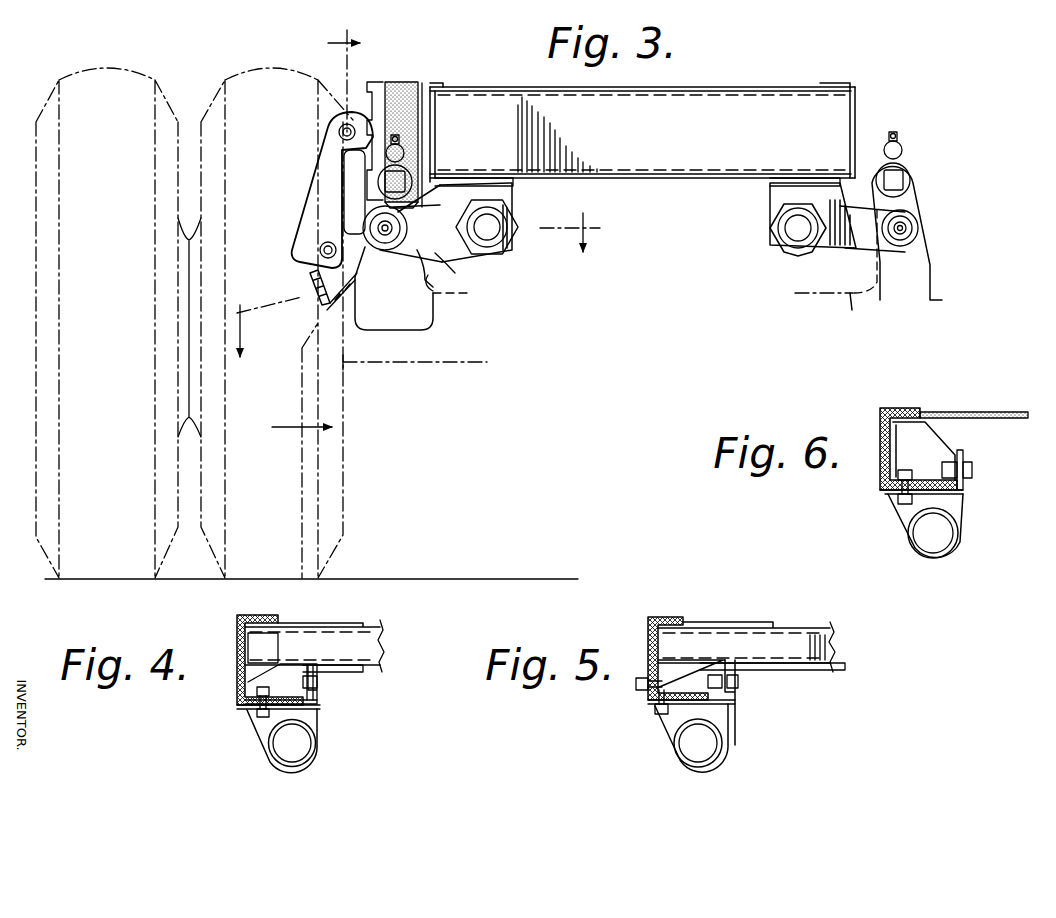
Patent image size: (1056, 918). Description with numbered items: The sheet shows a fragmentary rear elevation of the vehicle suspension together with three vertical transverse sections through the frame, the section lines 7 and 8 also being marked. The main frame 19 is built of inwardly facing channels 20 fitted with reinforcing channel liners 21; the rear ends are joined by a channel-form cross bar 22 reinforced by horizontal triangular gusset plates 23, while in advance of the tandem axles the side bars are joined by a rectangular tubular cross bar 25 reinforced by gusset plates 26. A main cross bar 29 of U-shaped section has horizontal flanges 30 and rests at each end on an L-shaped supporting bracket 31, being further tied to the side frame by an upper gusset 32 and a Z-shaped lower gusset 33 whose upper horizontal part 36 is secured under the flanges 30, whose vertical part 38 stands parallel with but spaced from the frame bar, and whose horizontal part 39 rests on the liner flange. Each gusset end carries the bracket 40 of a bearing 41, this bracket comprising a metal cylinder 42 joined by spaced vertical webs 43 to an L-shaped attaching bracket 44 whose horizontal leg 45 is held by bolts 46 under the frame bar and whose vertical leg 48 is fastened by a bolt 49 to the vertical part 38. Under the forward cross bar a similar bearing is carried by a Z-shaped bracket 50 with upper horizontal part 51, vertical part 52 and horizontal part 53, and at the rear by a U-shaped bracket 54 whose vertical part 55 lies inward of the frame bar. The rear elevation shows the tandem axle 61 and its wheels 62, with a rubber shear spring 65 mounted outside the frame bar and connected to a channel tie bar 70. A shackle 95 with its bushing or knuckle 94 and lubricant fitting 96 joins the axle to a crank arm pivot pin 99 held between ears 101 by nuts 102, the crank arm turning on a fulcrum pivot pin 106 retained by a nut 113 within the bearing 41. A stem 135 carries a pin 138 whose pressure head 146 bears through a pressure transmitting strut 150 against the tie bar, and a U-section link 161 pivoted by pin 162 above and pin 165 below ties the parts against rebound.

In FIG. 3, the section line 7- 7 is at (316, 240).
In FIG. 3, the section line 8- 8 is at (428, 285).
In FIG. 3, the main frame 19 is at (854, 75).
In FIG. 3, the channel 20 is at (433, 84).
In FIG. 4, the channel 20 is at (238, 616).
In FIG. 5, the channel 20 is at (648, 618).
In FIG. 6, the channel 20 is at (895, 410).
In FIG. 3, the channel liner 21 is at (437, 108).
In FIG. 4, the channel liner 21 is at (260, 615).
In FIG. 5, the channel liner 21 is at (658, 618).
In FIG. 6, the channel liner 21 is at (913, 410).
In FIG. 3, the cross bar 22 is at (724, 100).
In FIG. 6, the gusset plate 23 is at (1013, 411).
In FIG. 4, the cross bar 25 is at (384, 634).
In FIG. 4, the gusset plate 26 is at (288, 623).
In FIG. 5, the main cross bar 29 is at (813, 625).
In FIG. 5, the horizontal flange 30 is at (830, 665).
In FIG. 5, the L-shaped supporting bracket 31 is at (692, 662).
In FIG. 5, the upper gusset 32 is at (748, 622).
In FIG. 5, the lower gusset 33 is at (725, 660).
In FIG. 5, the upper horizontal part 36 is at (764, 672).
In FIG. 5, the vertical part 38 is at (723, 684).
In FIG. 5, the horizontal part 39 is at (729, 717).
In FIG. 4, the bracket 40 is at (319, 728).
In FIG. 5, the bracket 40 is at (670, 747).
In FIG. 6, the bracket 40 is at (959, 508).
In FIG. 3, the bearing 41 is at (515, 200).
In FIG. 4, the bearing 41 is at (272, 768).
In FIG. 5, the bearing 41 is at (662, 737).
In FIG. 6, the bearing 41 is at (968, 523).
In FIG. 4, the metal cylinder 42 is at (297, 768).
In FIG. 5, the metal cylinder 42 is at (705, 768).
In FIG. 6, the metal cylinder 42 is at (952, 553).
In FIG. 4, the vertical web 43 is at (292, 743).
In FIG. 5, the vertical web 43 is at (698, 743).
In FIG. 6, the vertical web 43 is at (933, 533).
In FIG. 4, the L-shaped attaching bracket 44 is at (277, 713).
In FIG. 5, the L-shaped attaching bracket 44 is at (662, 720).
In FIG. 6, the L-shaped attaching bracket 44 is at (942, 503).
In FIG. 3, the horizontal leg 45 is at (502, 178).
In FIG. 4, the horizontal leg 45 is at (249, 711).
In FIG. 5, the horizontal leg 45 is at (657, 710).
In FIG. 6, the horizontal leg 45 is at (897, 500).
In FIG. 4, the bolt 46 is at (250, 721).
In FIG. 5, the bolt 46 is at (647, 698).
In FIG. 6, the bolt 46 is at (897, 517).
In FIG. 5, the vertical leg 48 is at (738, 682).
In FIG. 6, the vertical leg 48 is at (964, 460).
In FIG. 5, the bolt 49 is at (728, 677).
In FIG. 6, the bolt 49 is at (972, 477).
In FIG. 4, the bracket 50 is at (332, 670).
In FIG. 4, the upper horizontal part 51 is at (357, 664).
In FIG. 4, the vertical part 52 is at (319, 690).
In FIG. 4, the horizontal part 53 is at (319, 717).
In FIG. 6, the U-shaped bracket 54 is at (957, 438).
In FIG. 6, the vertical part 55 is at (952, 460).
In FIG. 3, the tandem axle 61 is at (447, 366).
In FIG. 3, the wheel 62 is at (165, 90).
In FIG. 3, the rubber shear spring 65 is at (411, 80).
In FIG. 3, the tie plate or bar 70 is at (368, 92).
In FIG. 3, the bushing or knuckle 94 is at (412, 177).
In FIG. 3, the shackle 95 is at (378, 198).
In FIG. 3, the lubricant fitting 96 is at (403, 149).
In FIG. 3, the crank arm pivot pin 99 is at (407, 229).
In FIG. 3, the ear 101 is at (470, 293).
In FIG. 3, the nut 102 is at (374, 252).
In FIG. 3, the fulcrum pivot pin 106 is at (500, 238).
In FIG. 3, the nut 113 is at (508, 237).
In FIG. 3, the central stem 135 is at (478, 265).
In FIG. 3, the pin 138 is at (312, 292).
In FIG. 3, the pressure head 146 is at (316, 270).
In FIG. 3, the pressure transmitting strut 150 is at (353, 176).
In FIG. 3, the link 161 is at (318, 160).
In FIG. 3, the pivot pin 162 is at (336, 130).
In FIG. 3, the pivot pin 165 is at (320, 252).